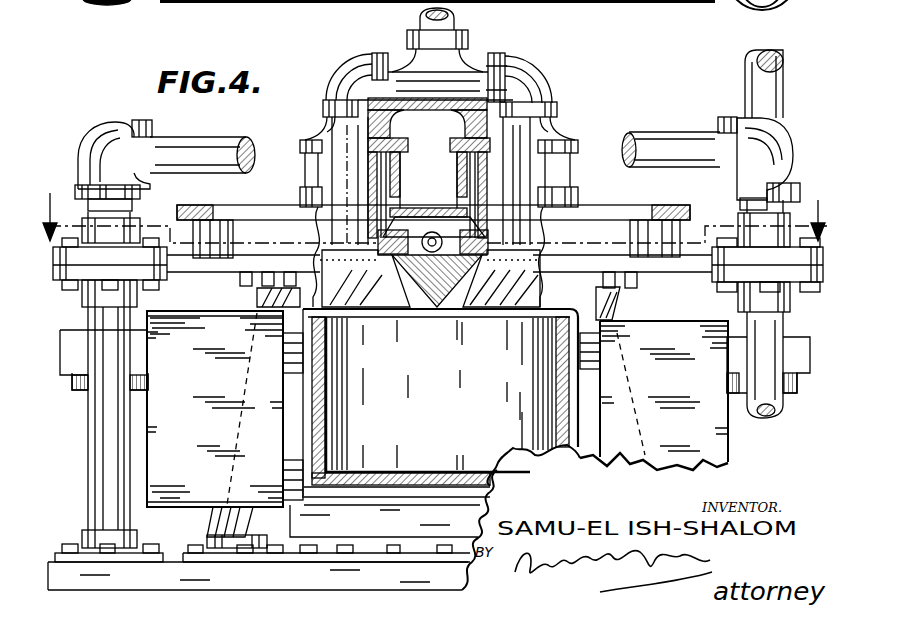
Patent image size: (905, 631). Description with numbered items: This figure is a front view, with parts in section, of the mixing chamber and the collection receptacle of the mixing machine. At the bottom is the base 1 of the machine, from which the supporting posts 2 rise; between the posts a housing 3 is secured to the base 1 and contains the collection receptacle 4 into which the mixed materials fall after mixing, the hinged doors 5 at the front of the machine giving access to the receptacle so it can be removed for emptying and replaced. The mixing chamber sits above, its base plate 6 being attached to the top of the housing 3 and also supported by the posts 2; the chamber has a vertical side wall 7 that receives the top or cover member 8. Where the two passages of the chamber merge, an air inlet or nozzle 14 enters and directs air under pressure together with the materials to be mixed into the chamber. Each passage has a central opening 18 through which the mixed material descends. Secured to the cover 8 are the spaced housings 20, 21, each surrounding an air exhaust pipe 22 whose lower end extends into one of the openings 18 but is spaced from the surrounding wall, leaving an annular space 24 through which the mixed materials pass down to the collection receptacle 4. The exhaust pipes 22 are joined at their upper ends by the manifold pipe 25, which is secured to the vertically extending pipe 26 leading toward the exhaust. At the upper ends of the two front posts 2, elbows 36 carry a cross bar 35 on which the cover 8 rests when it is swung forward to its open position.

The base 1 is at (163, 570).
The supporting posts 2 is at (97, 430).
The housing 3 is at (617, 310).
The collection receptacle 4 is at (440, 407).
The hinged doors 5 is at (434, 334).
The base plate 6 is at (213, 262).
The vertical side wall 7 is at (607, 230).
The top or cover member 8 is at (662, 220).
The air inlet or nozzle 14 is at (410, 283).
The central opening 18 is at (362, 257).
The housing 20 is at (583, 168).
The housing 21 is at (300, 166).
The air exhaust pipe 22 is at (460, 175).
The annular space 24 is at (447, 207).
The manifold pipe 25 is at (467, 65).
The vertically extending pipe 26 is at (417, 23).
The cross bar 35 is at (230, 125).
The elbows 36 is at (113, 113).